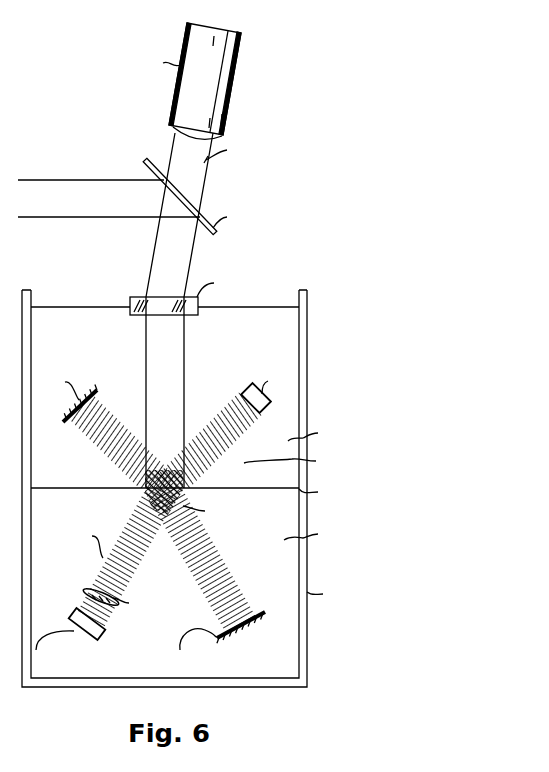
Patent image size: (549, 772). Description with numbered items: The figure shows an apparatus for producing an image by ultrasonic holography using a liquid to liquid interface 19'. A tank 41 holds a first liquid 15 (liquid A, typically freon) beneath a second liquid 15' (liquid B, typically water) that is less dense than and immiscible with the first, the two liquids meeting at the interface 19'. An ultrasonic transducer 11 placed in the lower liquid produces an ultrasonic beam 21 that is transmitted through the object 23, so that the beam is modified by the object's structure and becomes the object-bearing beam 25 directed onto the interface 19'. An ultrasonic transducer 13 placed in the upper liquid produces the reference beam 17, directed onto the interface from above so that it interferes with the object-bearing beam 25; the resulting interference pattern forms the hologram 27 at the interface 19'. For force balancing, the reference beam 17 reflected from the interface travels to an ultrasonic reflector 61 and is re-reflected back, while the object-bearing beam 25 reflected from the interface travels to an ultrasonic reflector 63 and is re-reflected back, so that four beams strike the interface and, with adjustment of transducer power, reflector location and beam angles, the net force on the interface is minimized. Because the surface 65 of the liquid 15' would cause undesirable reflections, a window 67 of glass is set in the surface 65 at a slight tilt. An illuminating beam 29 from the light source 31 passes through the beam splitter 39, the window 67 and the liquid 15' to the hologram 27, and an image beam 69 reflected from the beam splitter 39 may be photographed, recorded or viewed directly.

The light source 31 is at (175, 88).
The illuminating beam 29 is at (205, 189).
The beam splitter 39 is at (146, 160).
The image beam 69 is at (74, 180).
The tank 41 is at (300, 576).
The liquid surface 65 is at (88, 306).
The window 67 is at (136, 296).
The liquid to liquid interface 19' is at (224, 478).
The second liquid 15' is at (344, 419).
The first liquid 15 is at (343, 581).
The ultrasonic reflector 61 is at (65, 418).
The ultrasonic transducer 13 is at (265, 402).
The reference beam 17 is at (219, 420).
The hologram 27 is at (196, 493).
The ultrasonic transducer 11 is at (72, 622).
The object 23 is at (88, 590).
The ultrasonic beam 21 is at (82, 598).
The object-bearing beam 25 is at (136, 563).
The ultrasonic reflector 63 is at (283, 598).